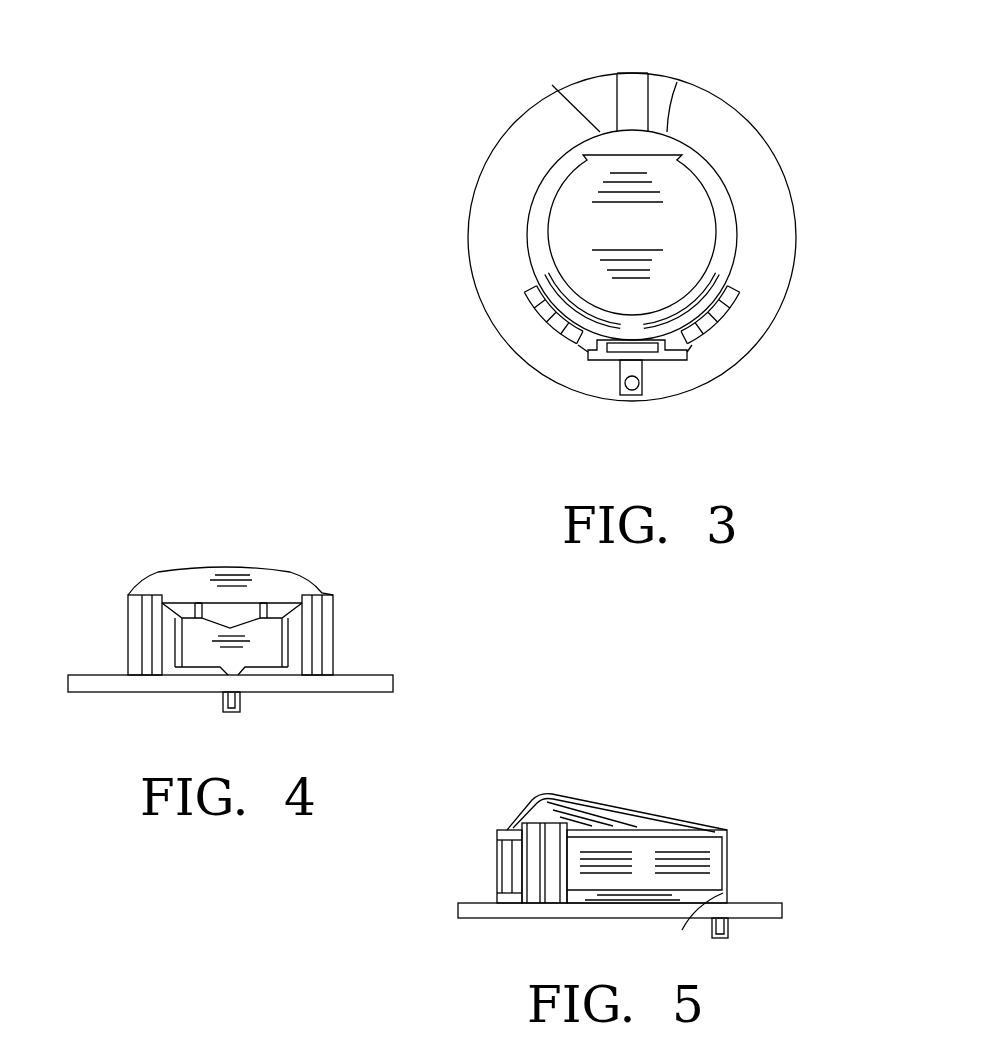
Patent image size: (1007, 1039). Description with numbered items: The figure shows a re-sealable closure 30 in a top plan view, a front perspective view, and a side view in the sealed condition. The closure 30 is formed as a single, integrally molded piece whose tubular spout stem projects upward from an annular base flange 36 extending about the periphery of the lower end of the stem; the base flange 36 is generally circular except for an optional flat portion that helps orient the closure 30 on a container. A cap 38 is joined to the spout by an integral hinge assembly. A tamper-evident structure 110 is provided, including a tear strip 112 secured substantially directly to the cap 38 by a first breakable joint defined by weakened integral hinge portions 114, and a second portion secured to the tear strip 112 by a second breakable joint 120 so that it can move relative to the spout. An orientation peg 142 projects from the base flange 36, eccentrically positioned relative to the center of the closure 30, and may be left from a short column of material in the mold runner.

In FIG. 3, the re-sealable closure 30 is at (750, 77).
In FIG. 4, the re-sealable closure 30 is at (288, 537).
In FIG. 5, the re-sealable closure 30 is at (697, 792).
In FIG. 3, the annular base flange 36 is at (654, 235).
In FIG. 3, the cap 38 is at (632, 241).
In FIG. 3, the tamper-evident structure 110 is at (727, 318).
In FIG. 4, the tamper-evident structure 110 is at (333, 638).
In FIG. 5, the tamper-evident structure 110 is at (497, 868).
In FIG. 3, the tear strip 112 is at (703, 342).
In FIG. 3, the weakened integral hinge portion 114 is at (553, 338).
In FIG. 3, the second breakable joint 120 is at (620, 375).
In FIG. 4, the orientation peg 142 is at (242, 703).